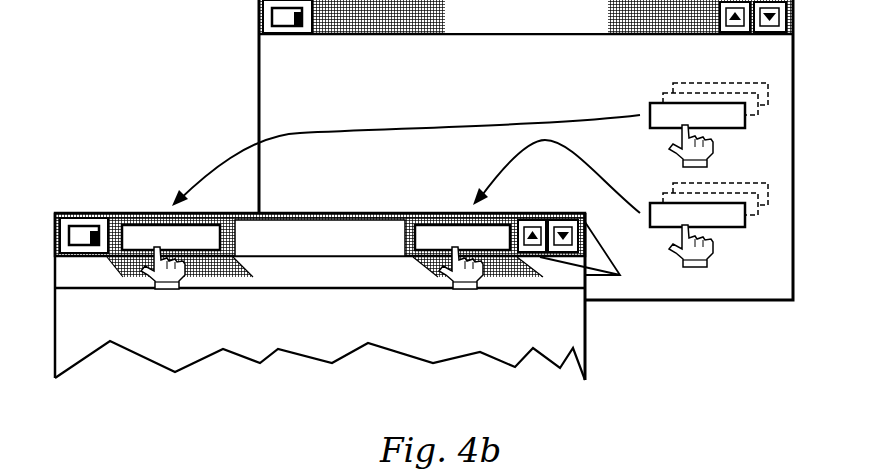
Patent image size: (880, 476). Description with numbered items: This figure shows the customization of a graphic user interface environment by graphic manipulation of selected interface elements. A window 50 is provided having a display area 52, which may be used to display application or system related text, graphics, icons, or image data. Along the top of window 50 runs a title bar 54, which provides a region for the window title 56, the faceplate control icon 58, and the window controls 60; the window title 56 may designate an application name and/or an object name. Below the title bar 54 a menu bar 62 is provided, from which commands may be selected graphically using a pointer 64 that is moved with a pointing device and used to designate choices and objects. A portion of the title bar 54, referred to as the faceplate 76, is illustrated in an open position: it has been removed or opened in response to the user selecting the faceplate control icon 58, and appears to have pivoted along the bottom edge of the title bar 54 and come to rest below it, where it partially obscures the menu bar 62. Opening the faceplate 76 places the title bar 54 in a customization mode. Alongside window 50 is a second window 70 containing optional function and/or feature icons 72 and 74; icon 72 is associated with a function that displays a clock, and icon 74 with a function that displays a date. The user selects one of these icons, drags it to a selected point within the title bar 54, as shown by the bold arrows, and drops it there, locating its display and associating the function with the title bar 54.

The window 50 is at (340, 272).
The display area 52 is at (123, 333).
The title bar 54 is at (418, 224).
The window title 56 is at (283, 218).
The faceplate control icon 58 is at (97, 218).
The window controls 60 is at (530, 220).
The menu bar 62 is at (534, 289).
The pointer 64 is at (159, 289).
The window 70 is at (243, 78).
The optional function and/or feature icon 72 is at (745, 126).
The optional function and/or feature icon 74 is at (745, 219).
The faceplate 76 is at (597, 278).